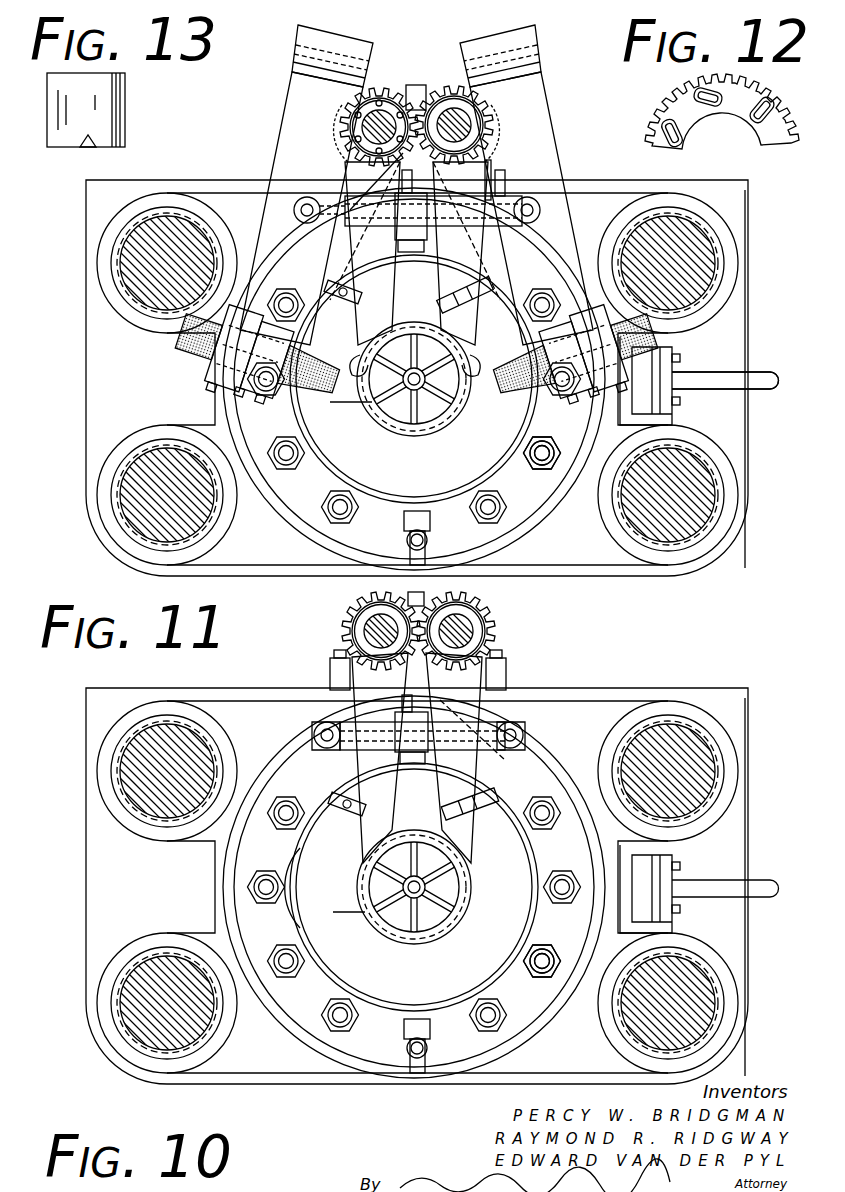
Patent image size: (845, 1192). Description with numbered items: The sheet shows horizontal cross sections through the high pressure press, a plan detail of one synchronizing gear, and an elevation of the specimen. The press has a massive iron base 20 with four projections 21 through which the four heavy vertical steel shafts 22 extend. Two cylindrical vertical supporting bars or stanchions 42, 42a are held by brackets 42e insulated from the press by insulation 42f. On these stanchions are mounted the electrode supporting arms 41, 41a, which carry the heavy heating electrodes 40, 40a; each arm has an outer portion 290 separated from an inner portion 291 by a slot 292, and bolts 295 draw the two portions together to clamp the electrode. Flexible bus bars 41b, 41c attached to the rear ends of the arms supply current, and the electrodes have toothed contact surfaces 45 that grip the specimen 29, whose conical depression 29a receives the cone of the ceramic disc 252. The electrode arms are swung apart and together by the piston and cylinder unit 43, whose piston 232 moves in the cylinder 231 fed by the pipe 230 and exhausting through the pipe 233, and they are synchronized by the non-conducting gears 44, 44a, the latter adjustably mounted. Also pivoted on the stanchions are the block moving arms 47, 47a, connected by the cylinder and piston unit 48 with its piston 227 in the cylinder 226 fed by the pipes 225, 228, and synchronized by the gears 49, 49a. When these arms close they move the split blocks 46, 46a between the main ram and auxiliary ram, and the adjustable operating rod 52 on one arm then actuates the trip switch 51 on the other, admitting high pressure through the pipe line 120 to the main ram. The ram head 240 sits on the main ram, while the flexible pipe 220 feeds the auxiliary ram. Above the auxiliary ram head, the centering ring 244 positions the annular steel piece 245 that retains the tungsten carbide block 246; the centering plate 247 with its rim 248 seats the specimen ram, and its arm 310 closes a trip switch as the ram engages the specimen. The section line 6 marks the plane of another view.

In FIG. 11, the section line 6 is at (248, 282).
In FIG. 11, the iron base 20 is at (748, 318).
In FIG. 10, the iron base 20 is at (410, 886).
In FIG. 11, the projections 21 is at (112, 226).
In FIG. 10, the projections 21 is at (410, 887).
In FIG. 11, the vertical steel shafts 22 is at (150, 262).
In FIG. 10, the vertical steel shafts 22 is at (410, 887).
In FIG. 13, the specimen 29 is at (115, 87).
In FIG. 13, the conical depression 29a is at (90, 150).
In FIG. 11, the heating electrode 40 is at (180, 343).
In FIG. 11, the heating electrode 40a is at (655, 348).
In FIG. 11, the electrode supporting arm 41 is at (300, 148).
In FIG. 11, the electrode supporting arm 41a is at (540, 183).
In FIG. 11, the flexible bus bar 41b is at (300, 58).
In FIG. 11, the flexible bus bar 41c is at (540, 45).
In FIG. 11, the vertical supporting bar 42 is at (378, 110).
In FIG. 10, the vertical supporting bar 42 is at (368, 623).
In FIG. 11, the vertical supporting bar 42a is at (455, 105).
In FIG. 10, the vertical supporting bar 42a is at (468, 623).
In FIG. 11, the bracket 42e is at (412, 85).
In FIG. 10, the bracket 42e is at (520, 648).
In FIG. 11, the insulation 42f is at (300, 158).
In FIG. 10, the insulation 42f is at (545, 688).
In FIG. 11, the piston and cylinder unit 43 is at (485, 225).
In FIG. 11, the synchronizing gear 44 is at (350, 150).
In FIG. 12, the adjustable synchronizing gear 44a is at (733, 115).
In FIG. 11, the adjustable synchronizing gear 44a is at (500, 126).
In FIG. 11, the contact surfaces 45 is at (355, 362).
In FIG. 11, the split block 46 is at (285, 450).
In FIG. 10, the split block 46 is at (413, 914).
In FIG. 11, the split block 46a is at (540, 470).
In FIG. 10, the split block 46a is at (554, 942).
In FIG. 11, the block moving arm 47 is at (340, 300).
In FIG. 10, the block moving arm 47 is at (355, 698).
In FIG. 11, the block moving arm 47a is at (500, 300).
In FIG. 10, the block moving arm 47a is at (480, 698).
In FIG. 11, the cylinder and piston unit 48 is at (432, 240).
In FIG. 10, the cylinder and piston unit 48 is at (432, 765).
In FIG. 10, the synchronizing gear 49 is at (345, 660).
In FIG. 10, the adjustable synchronizing gear 49a is at (492, 660).
In FIG. 11, the trip switch 51 is at (345, 285).
In FIG. 10, the trip switch 51 is at (348, 795).
In FIG. 11, the adjustable operating rod 52 is at (465, 305).
In FIG. 10, the adjustable operating rod 52 is at (462, 808).
In FIG. 11, the pipe line 120 is at (760, 392).
In FIG. 10, the pipe line 120 is at (713, 889).
In FIG. 11, the flexible pipe 220 is at (408, 540).
In FIG. 10, the flexible pipe 220 is at (392, 1046).
In FIG. 10, the pipe 225 is at (360, 733).
In FIG. 11, the cylinder 226 is at (440, 255).
In FIG. 10, the cylinder 226 is at (530, 756).
In FIG. 10, the piston 227 is at (418, 752).
In FIG. 10, the pipe 228 is at (490, 736).
In FIG. 11, the pipe 230 is at (525, 196).
In FIG. 11, the cylinder 231 is at (475, 175).
In FIG. 11, the piston 232 is at (428, 220).
In FIG. 11, the pipe 233 is at (360, 200).
In FIG. 11, the ram head 240 is at (440, 495).
In FIG. 10, the ram head 240 is at (442, 1032).
In FIG. 11, the centering ring 244 is at (395, 345).
In FIG. 10, the centering ring 244 is at (414, 875).
In FIG. 11, the annular cylindrical piece of steel 245 is at (400, 418).
In FIG. 10, the annular cylindrical piece of steel 245 is at (417, 949).
In FIG. 11, the block 246 is at (430, 425).
In FIG. 10, the block 246 is at (445, 970).
In FIG. 11, the centering plate 247 is at (412, 440).
In FIG. 10, the centering plate 247 is at (365, 949).
In FIG. 11, the rim 248 is at (340, 405).
In FIG. 10, the rim 248 is at (382, 970).
In FIG. 11, the ceramic disc 252 is at (440, 400).
In FIG. 10, the ceramic disc 252 is at (468, 947).
In FIG. 11, the outer portion 290 is at (200, 368).
In FIG. 11, the inner portion 291 is at (278, 320).
In FIG. 11, the slot 292 is at (215, 388).
In FIG. 11, the bolts 295 is at (210, 383).
In FIG. 11, the arm 310 is at (330, 455).
In FIG. 10, the arm 310 is at (325, 888).